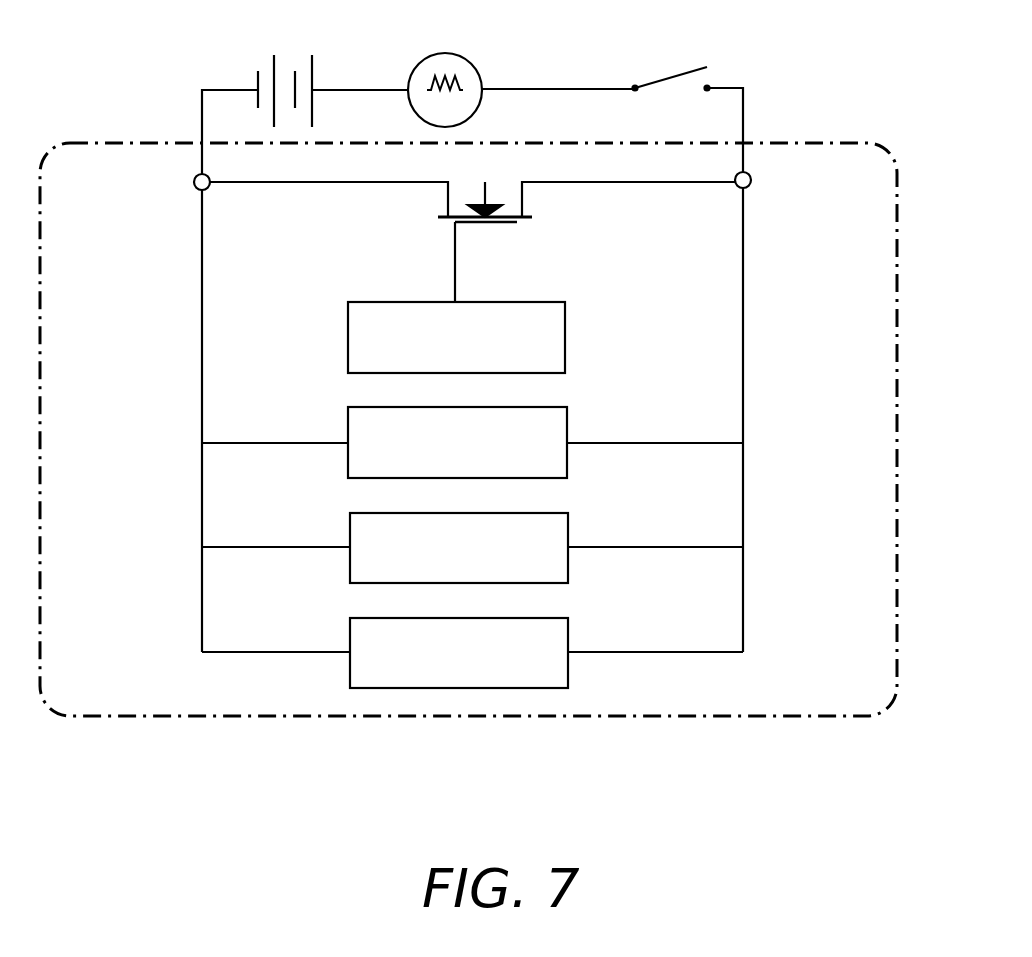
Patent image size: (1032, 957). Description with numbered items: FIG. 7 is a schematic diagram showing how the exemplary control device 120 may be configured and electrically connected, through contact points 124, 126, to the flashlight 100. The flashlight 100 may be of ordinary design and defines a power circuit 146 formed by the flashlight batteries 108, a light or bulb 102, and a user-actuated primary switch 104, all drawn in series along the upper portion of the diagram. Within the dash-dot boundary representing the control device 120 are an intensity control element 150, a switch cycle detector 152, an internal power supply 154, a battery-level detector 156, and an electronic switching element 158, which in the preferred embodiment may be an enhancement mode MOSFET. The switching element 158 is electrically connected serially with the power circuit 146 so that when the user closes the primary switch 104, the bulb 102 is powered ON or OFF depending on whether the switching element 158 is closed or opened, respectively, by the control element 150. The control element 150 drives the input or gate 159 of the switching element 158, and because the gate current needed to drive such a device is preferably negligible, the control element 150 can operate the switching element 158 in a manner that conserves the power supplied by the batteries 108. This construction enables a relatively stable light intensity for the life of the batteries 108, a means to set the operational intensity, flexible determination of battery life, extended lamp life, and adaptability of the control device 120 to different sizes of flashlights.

The flashlight 100 is at (826, 78).
The bulb 102 is at (436, 53).
The primary switch 104 is at (665, 78).
The batteries 108 is at (312, 63).
The power circuit 146 is at (348, 91).
The control device 120 is at (163, 742).
The contact point 124 is at (193, 189).
The contact point 126 is at (752, 180).
The intensity control element 150 is at (464, 356).
The switch cycle detector 152 is at (474, 462).
The internal power supply 154 is at (465, 565).
The battery-level detector 156 is at (460, 668).
The electronic switching element 158 is at (498, 226).
The gate 159 is at (453, 258).